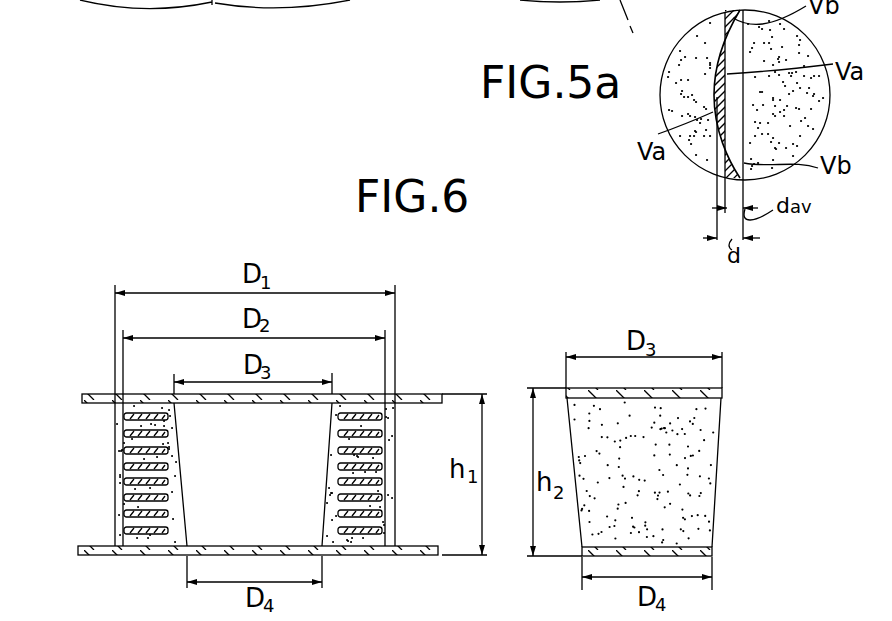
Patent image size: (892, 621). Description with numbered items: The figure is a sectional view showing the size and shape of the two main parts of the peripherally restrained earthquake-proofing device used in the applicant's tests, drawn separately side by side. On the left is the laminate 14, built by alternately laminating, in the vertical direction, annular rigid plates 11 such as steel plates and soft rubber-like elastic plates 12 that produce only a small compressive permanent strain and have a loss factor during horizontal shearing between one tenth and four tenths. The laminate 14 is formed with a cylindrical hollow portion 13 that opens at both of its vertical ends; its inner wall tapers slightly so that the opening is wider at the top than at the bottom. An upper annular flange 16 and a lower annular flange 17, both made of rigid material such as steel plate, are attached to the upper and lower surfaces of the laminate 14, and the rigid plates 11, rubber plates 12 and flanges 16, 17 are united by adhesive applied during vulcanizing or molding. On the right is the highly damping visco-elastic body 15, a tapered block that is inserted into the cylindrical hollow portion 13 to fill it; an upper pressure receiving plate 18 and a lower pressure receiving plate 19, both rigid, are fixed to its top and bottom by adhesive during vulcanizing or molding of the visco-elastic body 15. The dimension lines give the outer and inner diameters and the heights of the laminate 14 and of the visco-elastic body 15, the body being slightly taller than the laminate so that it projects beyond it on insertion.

The annular rigid plates 11 is at (382, 496).
The rubber-like elastic plates 12 is at (128, 487).
The cylindrical hollow portion 13 is at (327, 463).
The laminate 14 is at (107, 443).
The highly damping visco-elastic body 15 is at (719, 470).
The upper annular flange 16 is at (93, 394).
The lower annular flange 17 is at (363, 556).
The upper pressure receiving plate 18 is at (722, 393).
The lower pressure receiving plate 19 is at (713, 551).